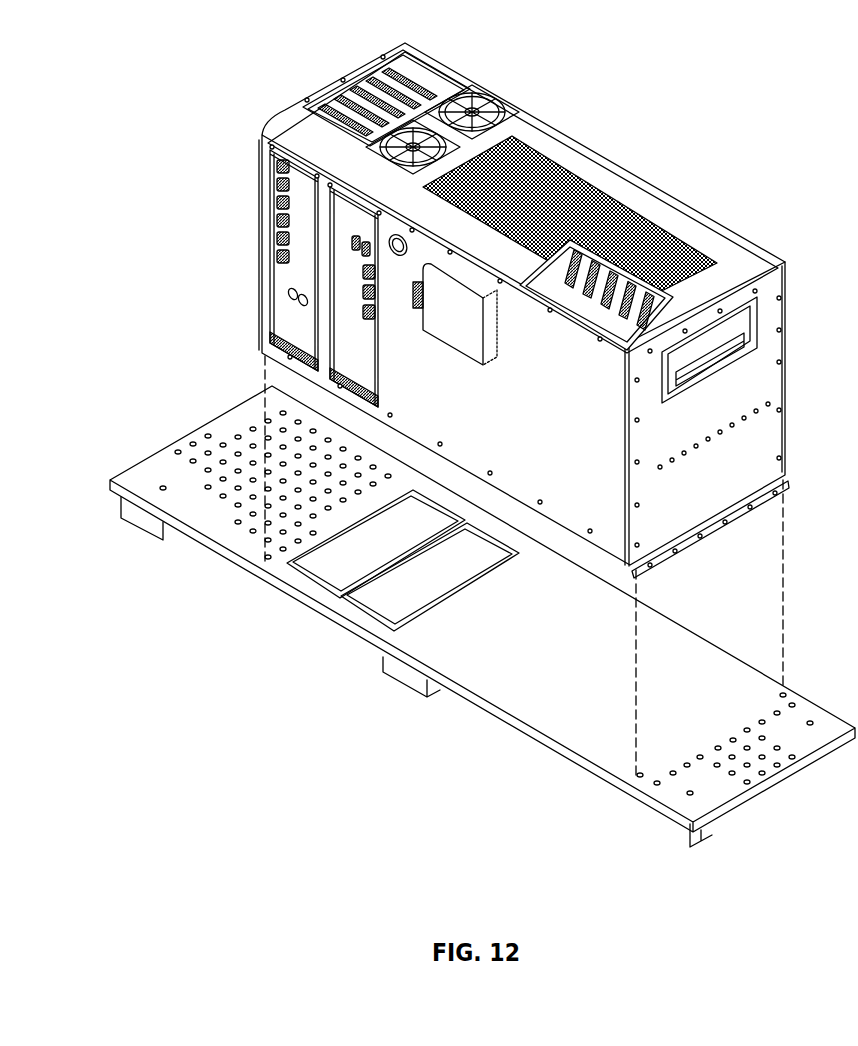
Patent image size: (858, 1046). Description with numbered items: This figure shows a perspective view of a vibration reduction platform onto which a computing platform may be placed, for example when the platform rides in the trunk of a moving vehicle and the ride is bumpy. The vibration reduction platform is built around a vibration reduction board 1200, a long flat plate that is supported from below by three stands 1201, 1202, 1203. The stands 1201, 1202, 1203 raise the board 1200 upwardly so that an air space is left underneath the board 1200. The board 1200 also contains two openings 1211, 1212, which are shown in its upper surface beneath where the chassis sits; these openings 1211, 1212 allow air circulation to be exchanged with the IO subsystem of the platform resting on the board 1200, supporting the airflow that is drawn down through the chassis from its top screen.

The vibration reduction board 1200 is at (592, 673).
The stand 1201 is at (133, 508).
The stand 1202 is at (408, 678).
The stand 1203 is at (660, 817).
The opening 1211 is at (333, 574).
The opening 1212 is at (388, 608).